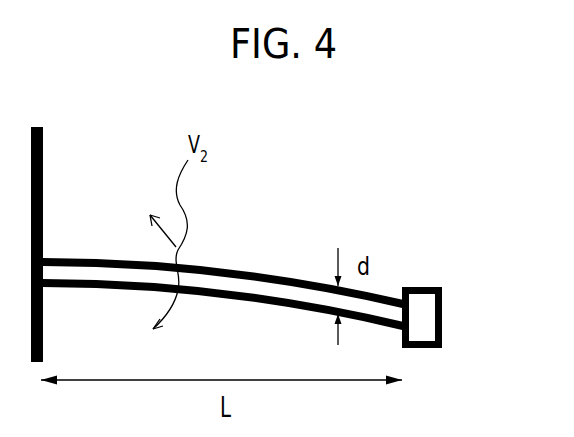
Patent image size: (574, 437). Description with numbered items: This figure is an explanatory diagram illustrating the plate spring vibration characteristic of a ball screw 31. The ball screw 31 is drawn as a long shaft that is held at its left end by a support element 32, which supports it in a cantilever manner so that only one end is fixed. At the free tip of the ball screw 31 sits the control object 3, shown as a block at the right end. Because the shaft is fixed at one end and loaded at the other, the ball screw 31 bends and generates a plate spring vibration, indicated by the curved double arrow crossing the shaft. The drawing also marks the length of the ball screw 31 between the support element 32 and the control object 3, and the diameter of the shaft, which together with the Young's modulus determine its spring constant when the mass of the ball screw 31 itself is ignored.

The support element 32 is at (43, 145).
The ball screw 31 is at (245, 282).
The control object 3 is at (425, 318).